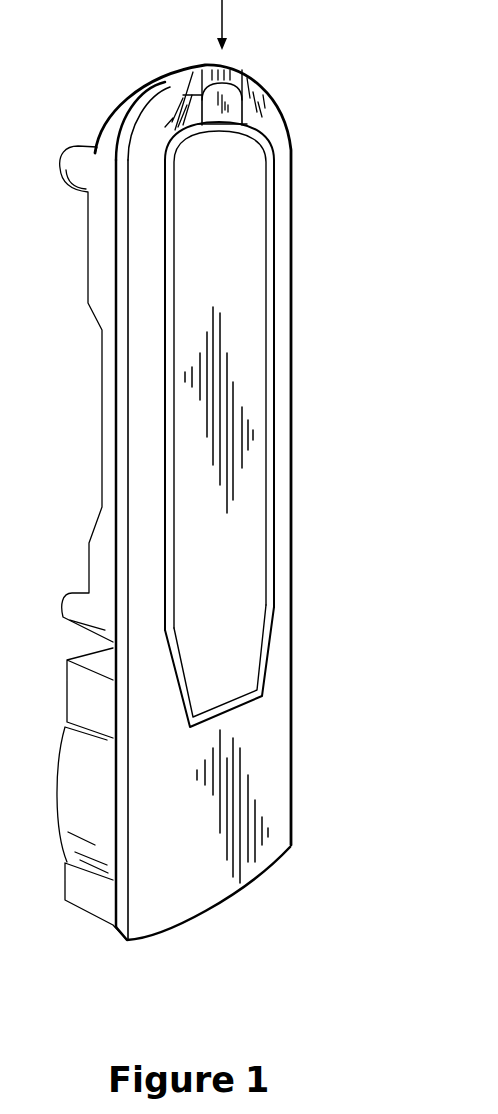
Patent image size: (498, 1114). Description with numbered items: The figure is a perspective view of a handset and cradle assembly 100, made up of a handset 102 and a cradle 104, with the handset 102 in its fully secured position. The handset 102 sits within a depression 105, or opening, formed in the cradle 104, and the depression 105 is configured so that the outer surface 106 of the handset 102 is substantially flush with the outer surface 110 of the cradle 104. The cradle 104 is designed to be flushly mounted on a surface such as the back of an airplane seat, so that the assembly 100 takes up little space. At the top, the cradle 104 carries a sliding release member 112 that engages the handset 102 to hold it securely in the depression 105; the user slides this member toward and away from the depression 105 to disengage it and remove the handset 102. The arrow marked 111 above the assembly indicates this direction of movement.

The handset and cradle assembly 100 is at (305, 107).
The handset 102 is at (242, 315).
The cradle 104 is at (293, 195).
The depression 105 is at (262, 677).
The outer surface of the handset 106 is at (238, 268).
The outer surface of the cradle 110 is at (193, 845).
The insertion direction arrow 111 is at (197, 25).
The sliding release member 112 is at (242, 72).